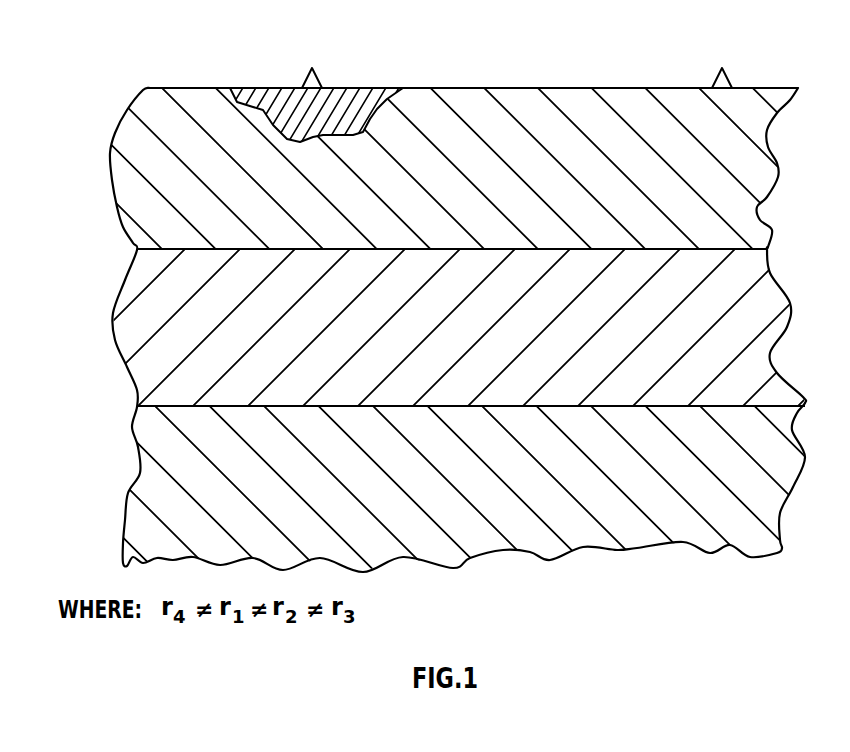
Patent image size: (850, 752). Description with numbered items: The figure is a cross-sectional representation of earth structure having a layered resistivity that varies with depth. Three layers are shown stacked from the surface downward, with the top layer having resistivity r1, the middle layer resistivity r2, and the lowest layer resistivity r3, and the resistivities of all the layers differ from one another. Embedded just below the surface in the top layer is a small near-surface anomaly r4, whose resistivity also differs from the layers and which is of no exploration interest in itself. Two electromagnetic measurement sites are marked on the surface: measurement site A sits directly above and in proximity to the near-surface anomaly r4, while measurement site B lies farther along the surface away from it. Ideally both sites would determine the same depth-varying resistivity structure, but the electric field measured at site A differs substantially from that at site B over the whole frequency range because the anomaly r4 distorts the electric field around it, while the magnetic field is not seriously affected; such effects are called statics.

The first layer resistivity r1 is at (425, 160).
The second layer resistivity r2 is at (432, 330).
The third layer resistivity r3 is at (425, 490).
The near-surface anomaly r4 is at (470, 132).
The measurement site A is at (299, 71).
The measurement site B is at (704, 69).